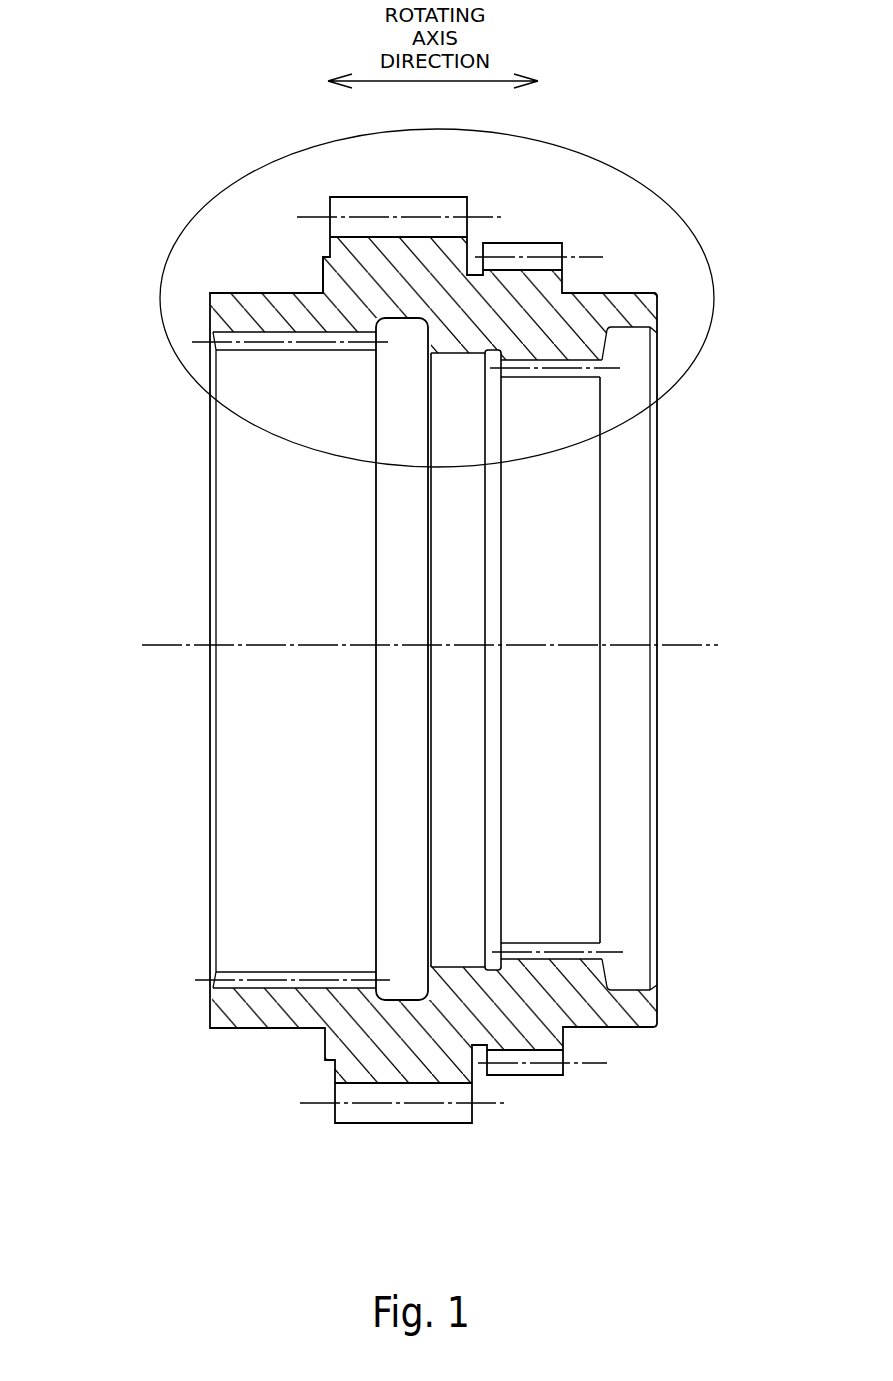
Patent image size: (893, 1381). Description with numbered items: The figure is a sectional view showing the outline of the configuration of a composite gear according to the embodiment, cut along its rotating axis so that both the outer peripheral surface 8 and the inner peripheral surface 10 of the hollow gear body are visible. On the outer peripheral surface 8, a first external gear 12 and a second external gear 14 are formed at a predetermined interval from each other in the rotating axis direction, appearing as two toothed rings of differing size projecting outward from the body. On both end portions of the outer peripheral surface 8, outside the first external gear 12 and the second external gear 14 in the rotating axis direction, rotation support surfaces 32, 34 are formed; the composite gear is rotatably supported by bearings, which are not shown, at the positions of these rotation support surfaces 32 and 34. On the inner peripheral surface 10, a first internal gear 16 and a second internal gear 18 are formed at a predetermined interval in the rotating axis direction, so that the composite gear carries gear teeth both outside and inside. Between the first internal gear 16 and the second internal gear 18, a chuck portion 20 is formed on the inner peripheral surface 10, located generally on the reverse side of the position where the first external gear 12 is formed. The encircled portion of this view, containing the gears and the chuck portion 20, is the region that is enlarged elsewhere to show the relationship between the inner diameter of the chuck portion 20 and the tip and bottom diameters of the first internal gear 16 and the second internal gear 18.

The outer peripheral surface 8 is at (356, 1163).
The inner peripheral surface 10 is at (302, 921).
The first external gear 12 is at (405, 207).
The second external gear 14 is at (520, 248).
The first internal gear 16 is at (305, 350).
The second internal gear 18 is at (553, 376).
The chuck portion 20 is at (457, 355).
The rotation support surface 32 is at (283, 293).
The rotation support surface 34 is at (605, 292).